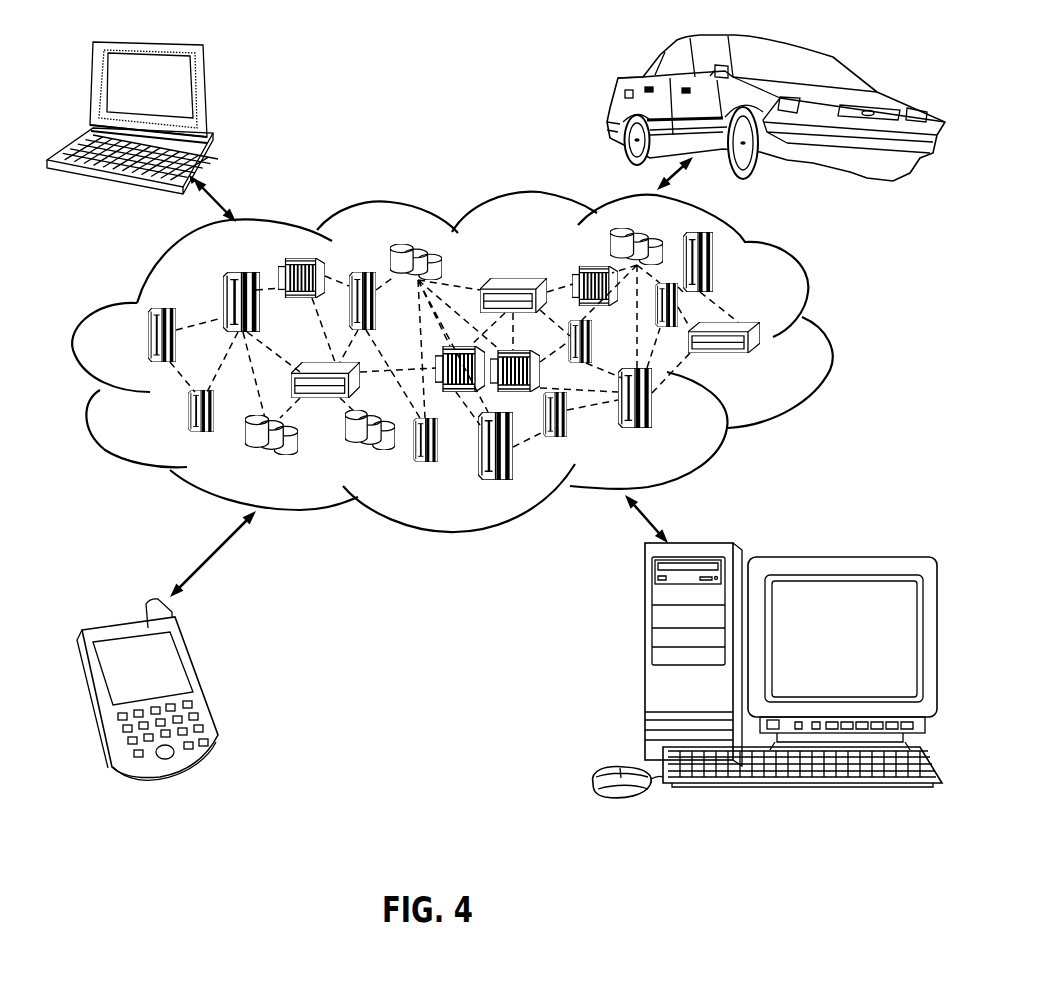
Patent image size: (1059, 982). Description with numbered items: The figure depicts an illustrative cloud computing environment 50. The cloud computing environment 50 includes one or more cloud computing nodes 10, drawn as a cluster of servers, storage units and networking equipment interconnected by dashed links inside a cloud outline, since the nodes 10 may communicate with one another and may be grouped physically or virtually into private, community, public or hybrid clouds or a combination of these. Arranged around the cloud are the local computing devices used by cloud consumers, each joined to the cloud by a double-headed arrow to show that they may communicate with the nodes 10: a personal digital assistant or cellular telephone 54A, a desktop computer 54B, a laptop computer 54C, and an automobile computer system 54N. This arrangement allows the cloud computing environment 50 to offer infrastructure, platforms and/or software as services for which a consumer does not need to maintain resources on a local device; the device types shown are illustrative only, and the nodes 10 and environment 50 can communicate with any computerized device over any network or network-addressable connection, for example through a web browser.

The cloud computing node 10 is at (785, 361).
The cloud computing environment 50 is at (805, 298).
The personal digital assistant or cellular telephone 54A is at (197, 680).
The desktop computer 54B is at (643, 662).
The laptop computer 54C is at (210, 92).
The automobile computer system 54N is at (618, 97).